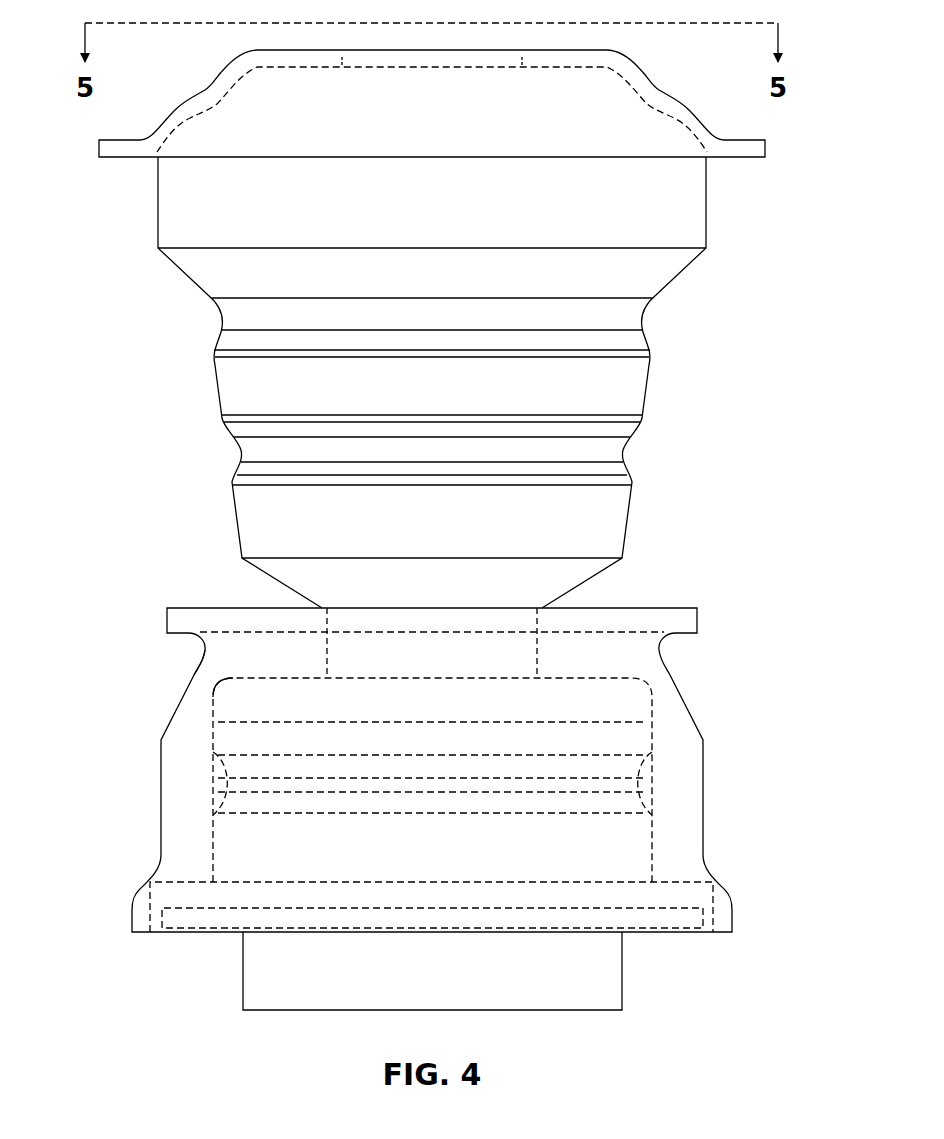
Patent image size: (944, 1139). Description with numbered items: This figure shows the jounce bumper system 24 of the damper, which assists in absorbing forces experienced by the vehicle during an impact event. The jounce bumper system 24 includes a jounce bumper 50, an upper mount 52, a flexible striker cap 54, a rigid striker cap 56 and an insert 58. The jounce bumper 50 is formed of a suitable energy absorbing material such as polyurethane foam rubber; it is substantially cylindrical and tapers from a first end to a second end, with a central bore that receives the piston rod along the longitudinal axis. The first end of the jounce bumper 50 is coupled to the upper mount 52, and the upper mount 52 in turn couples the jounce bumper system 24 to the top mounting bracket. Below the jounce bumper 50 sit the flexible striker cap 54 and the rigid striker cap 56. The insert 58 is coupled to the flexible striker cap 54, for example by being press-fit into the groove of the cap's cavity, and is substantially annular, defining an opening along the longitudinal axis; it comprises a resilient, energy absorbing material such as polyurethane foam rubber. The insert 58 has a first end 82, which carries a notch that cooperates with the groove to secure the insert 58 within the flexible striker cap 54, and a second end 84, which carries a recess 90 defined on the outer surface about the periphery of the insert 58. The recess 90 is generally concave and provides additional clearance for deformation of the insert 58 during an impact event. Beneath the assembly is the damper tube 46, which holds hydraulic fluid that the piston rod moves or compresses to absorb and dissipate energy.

The jounce bumper system 24 is at (784, 118).
The damper tube 46 is at (622, 970).
The jounce bumper 50 is at (712, 306).
The upper mount 52 is at (680, 100).
The flexible striker cap 54 is at (708, 715).
The rigid striker cap 56 is at (718, 909).
The insert 58 is at (652, 696).
The first end 82 is at (212, 689).
The second end 84 is at (226, 782).
The recess 90 is at (640, 782).